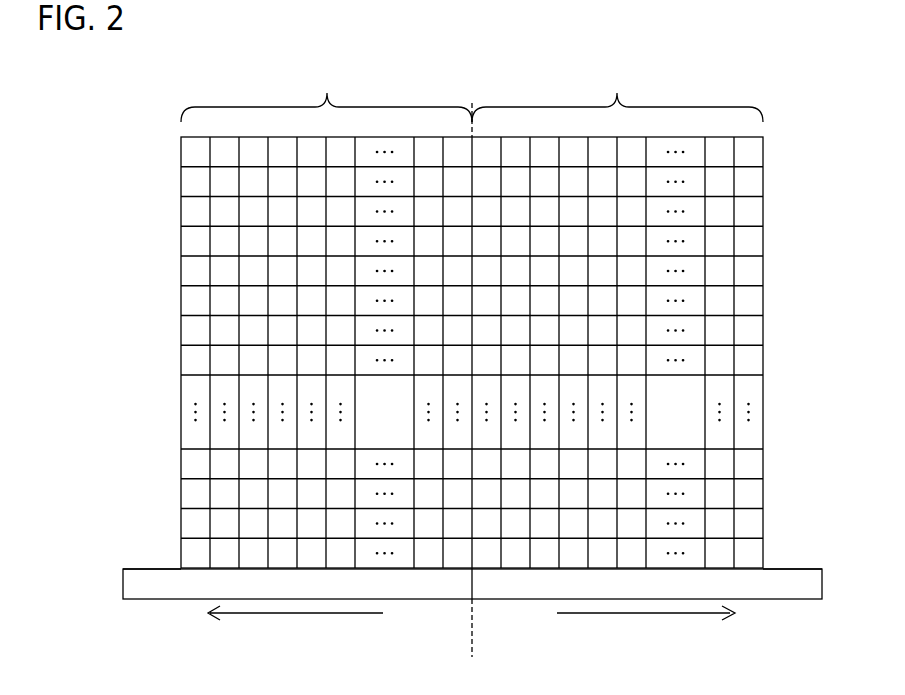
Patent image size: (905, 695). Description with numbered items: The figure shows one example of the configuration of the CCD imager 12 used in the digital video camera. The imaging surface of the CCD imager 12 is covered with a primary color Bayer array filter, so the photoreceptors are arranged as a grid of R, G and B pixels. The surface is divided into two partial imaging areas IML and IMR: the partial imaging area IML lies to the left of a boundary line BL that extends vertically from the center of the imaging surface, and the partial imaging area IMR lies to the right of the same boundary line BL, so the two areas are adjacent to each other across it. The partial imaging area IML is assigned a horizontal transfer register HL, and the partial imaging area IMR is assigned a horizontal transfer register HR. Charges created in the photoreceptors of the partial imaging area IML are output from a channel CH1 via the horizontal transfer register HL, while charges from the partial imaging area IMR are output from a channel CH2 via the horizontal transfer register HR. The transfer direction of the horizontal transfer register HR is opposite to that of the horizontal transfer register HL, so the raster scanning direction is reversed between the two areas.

The CCD imager 12 is at (143, 133).
The partial imaging area IML is at (326, 95).
The partial imaging area IMR is at (617, 95).
The boundary line BL is at (472, 628).
The horizontal transfer register HL is at (160, 569).
The horizontal transfer register HR is at (787, 569).
The channel CH1 is at (295, 627).
The channel CH2 is at (646, 627).